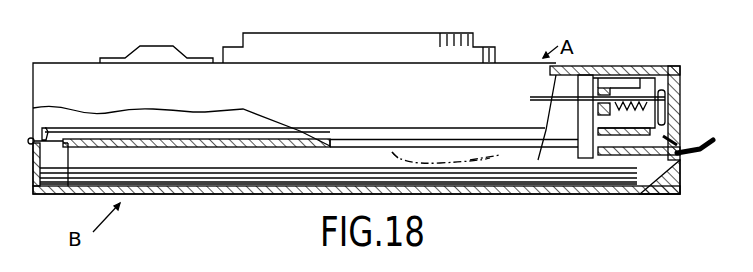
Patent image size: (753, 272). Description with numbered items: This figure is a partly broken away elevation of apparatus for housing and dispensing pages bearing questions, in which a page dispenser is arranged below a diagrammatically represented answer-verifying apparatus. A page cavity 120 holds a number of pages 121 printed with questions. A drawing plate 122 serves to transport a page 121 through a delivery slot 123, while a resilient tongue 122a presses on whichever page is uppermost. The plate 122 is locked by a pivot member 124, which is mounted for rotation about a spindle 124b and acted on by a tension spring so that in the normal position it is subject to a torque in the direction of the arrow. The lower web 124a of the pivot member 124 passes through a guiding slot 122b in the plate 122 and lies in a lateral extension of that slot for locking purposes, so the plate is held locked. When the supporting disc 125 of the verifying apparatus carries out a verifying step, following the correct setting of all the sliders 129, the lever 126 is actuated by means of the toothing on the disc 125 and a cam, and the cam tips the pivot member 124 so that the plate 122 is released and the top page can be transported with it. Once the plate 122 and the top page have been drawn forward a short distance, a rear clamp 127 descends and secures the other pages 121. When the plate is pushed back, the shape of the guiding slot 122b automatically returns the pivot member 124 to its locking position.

The page cavity 120 is at (556, 162).
The pages 121 is at (437, 178).
The drawing plate 122 is at (318, 140).
The resilient tongue 122a is at (478, 163).
The guiding slot 122b is at (392, 150).
The delivery slot 123 is at (687, 170).
The pivot member 124 is at (585, 80).
The lower web 124a is at (593, 155).
The spindle 124b is at (640, 75).
The supporting disc 125 is at (555, 97).
The lever 126 is at (675, 107).
The rear clamp 127 is at (68, 195).
The sliders 129 is at (138, 57).